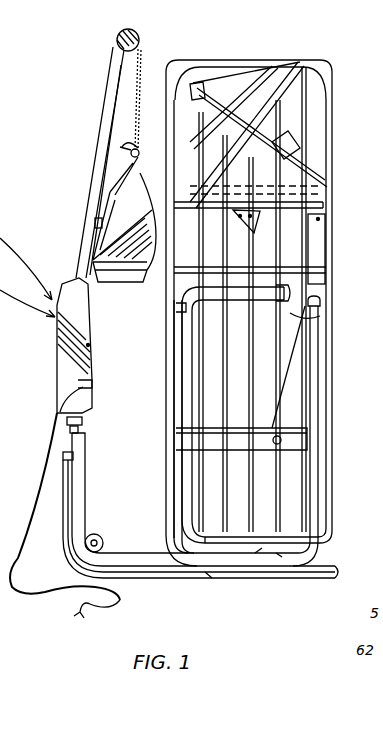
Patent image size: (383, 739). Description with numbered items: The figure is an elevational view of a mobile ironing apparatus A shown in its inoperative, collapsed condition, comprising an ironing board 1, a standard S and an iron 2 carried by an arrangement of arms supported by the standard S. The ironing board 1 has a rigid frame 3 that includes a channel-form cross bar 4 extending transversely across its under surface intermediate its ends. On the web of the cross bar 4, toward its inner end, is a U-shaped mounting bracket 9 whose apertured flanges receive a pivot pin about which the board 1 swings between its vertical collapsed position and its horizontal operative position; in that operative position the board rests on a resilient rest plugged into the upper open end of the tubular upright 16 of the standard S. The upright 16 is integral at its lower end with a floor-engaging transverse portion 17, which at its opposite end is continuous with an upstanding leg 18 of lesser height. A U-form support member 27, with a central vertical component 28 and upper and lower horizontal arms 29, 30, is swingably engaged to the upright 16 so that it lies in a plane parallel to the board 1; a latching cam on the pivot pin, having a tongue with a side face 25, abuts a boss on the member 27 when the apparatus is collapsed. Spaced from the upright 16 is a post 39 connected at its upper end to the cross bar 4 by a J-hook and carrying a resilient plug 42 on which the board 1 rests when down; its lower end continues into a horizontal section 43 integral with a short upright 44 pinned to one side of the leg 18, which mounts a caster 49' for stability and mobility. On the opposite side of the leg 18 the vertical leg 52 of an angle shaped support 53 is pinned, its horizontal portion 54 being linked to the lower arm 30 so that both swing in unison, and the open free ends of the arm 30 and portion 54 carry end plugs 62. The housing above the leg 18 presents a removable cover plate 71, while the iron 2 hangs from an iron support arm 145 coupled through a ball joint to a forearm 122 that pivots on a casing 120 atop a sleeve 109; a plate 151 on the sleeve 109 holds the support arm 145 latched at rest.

The ironing board 1 is at (330, 62).
The iron 2 is at (117, 202).
The rigid frame 3 is at (332, 267).
The cross bar 4 is at (320, 313).
The mounting bracket 9 is at (173, 312).
The upright 16 is at (182, 480).
The transverse portion 17 is at (125, 562).
The upstanding leg 18 is at (83, 435).
The side face 25 is at (223, 548).
The support member 27 is at (240, 282).
The central vertical component 28 is at (186, 396).
The upper horizontal arm 29 is at (286, 281).
The lower horizontal arm 30 is at (280, 556).
The post 39 is at (323, 353).
The resilient plug 42 is at (322, 298).
The horizontal section 43 is at (262, 548).
The short upright 44 is at (87, 460).
The caster 49' is at (115, 537).
The vertical leg 52 is at (63, 463).
The angle shaped support 53 is at (72, 568).
The horizontal portion 54 is at (207, 578).
The end plug 62 is at (66, 452).
The cover plate 71 is at (58, 365).
The sleeve 109 is at (107, 82).
The casing 120 is at (140, 33).
The forearm 122 is at (141, 62).
The iron support arm 145 is at (116, 177).
The plate 151 is at (90, 225).
The ironing apparatus A is at (235, 50).
The standard S is at (138, 612).